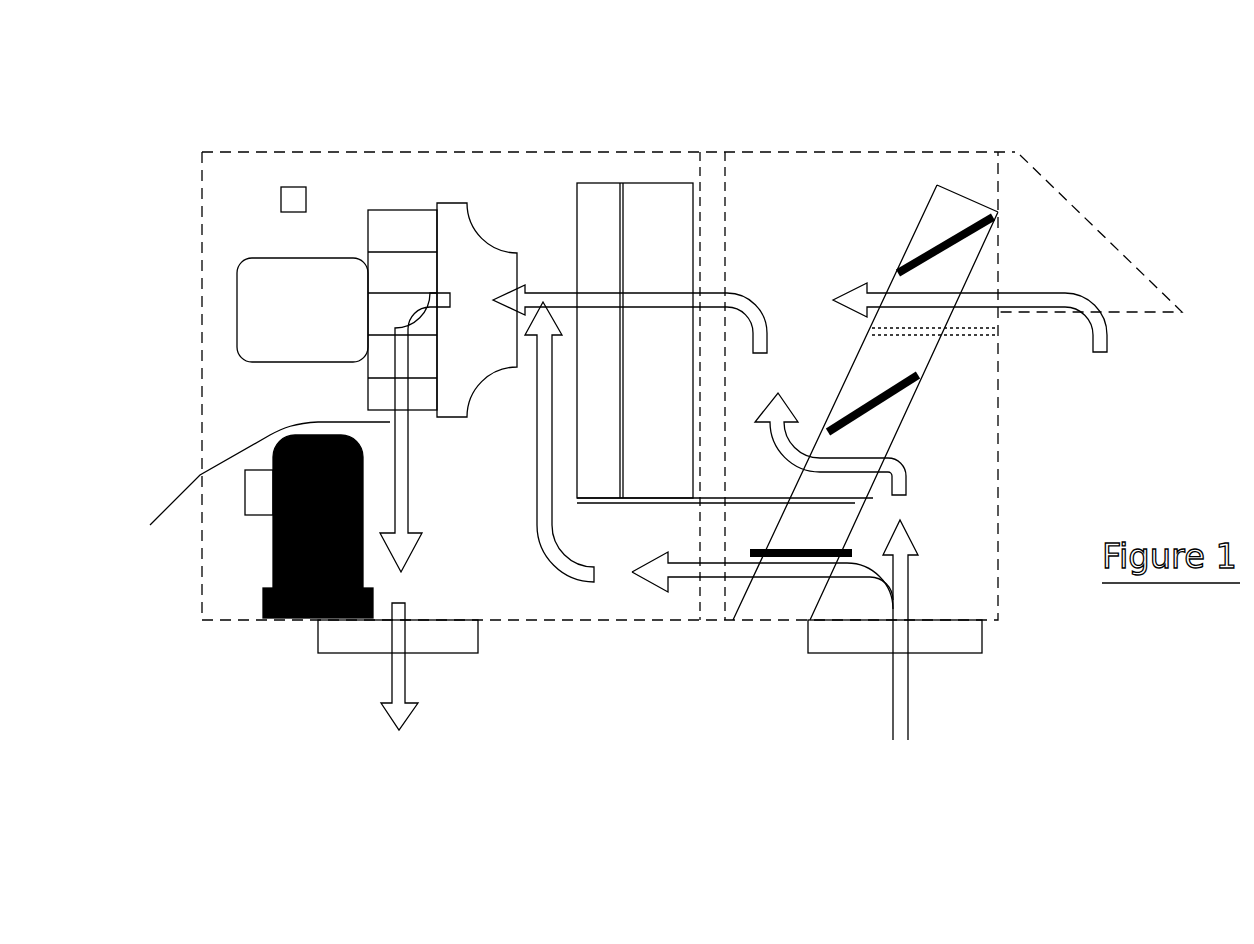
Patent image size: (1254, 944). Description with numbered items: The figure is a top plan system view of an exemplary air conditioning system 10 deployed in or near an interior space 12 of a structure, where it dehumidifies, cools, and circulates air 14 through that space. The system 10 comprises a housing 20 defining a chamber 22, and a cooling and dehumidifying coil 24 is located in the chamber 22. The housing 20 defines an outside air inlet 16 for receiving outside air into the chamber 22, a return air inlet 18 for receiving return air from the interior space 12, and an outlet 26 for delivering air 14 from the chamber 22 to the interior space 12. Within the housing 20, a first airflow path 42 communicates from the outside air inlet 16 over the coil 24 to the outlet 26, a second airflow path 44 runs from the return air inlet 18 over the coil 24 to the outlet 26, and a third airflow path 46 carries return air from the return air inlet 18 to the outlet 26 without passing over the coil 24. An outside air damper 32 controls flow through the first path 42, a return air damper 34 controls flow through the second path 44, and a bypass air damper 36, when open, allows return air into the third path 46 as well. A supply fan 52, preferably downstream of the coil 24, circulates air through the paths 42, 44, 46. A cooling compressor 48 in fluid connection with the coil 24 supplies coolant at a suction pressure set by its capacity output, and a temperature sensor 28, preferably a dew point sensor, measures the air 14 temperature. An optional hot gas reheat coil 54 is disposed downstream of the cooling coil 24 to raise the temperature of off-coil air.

The air conditioning system 10 is at (192, 182).
The interior space 12 is at (300, 710).
The air 14 is at (912, 733).
The outside air inlet 16 is at (1107, 306).
The return air inlet 18 is at (917, 655).
The housing 20 is at (202, 292).
The chamber 22 is at (253, 427).
The cooling and dehumidifying coil 24 is at (725, 293).
The outlet 26 is at (383, 658).
The temperature sensor 28 is at (302, 187).
The outside air damper 32 is at (993, 217).
The return air damper 34 is at (918, 392).
The bypass air damper 36 is at (833, 558).
The first airflow path 42 is at (867, 283).
The second airflow path 44 is at (876, 473).
The third airflow path 46 is at (735, 578).
The cooling compressor 48 is at (262, 542).
The supply fan 52 is at (423, 203).
The hot gas reheat coil 54 is at (593, 175).